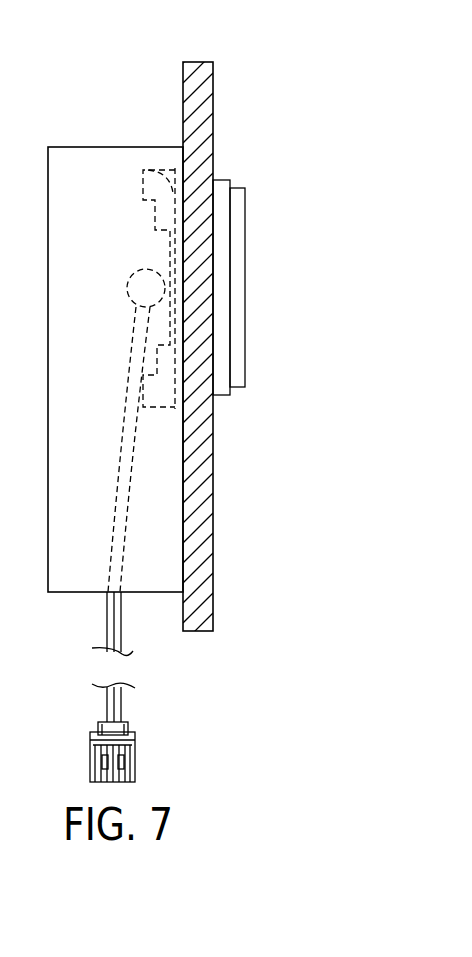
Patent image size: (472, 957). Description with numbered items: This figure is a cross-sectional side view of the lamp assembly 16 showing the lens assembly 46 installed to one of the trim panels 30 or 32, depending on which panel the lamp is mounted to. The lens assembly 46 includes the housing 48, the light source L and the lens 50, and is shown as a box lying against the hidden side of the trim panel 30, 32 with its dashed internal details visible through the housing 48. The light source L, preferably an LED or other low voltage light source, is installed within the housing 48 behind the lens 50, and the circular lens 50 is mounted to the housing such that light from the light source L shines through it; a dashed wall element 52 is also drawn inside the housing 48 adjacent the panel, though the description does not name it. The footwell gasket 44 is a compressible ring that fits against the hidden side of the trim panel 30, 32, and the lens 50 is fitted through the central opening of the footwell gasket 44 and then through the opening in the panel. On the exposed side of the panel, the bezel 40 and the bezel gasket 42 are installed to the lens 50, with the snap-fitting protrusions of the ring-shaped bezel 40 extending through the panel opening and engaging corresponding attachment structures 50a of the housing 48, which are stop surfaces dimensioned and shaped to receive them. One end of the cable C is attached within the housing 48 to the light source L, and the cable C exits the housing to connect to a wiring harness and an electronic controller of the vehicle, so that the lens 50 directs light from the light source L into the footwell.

The lamp assembly 16 is at (177, 37).
The trim panel 30 is at (249, 348).
The trim panel 32 is at (197, 486).
The bezel gasket 42 is at (222, 238).
The bezel 40 is at (278, 301).
The lens 50 is at (245, 353).
The lens assembly 46 is at (85, 138).
The housing 48 is at (82, 183).
The footwell gasket 44 is at (150, 166).
The attachment structures 50a is at (155, 229).
The circuit board 52 is at (172, 313).
The light source L is at (129, 272).
The cable C is at (106, 625).